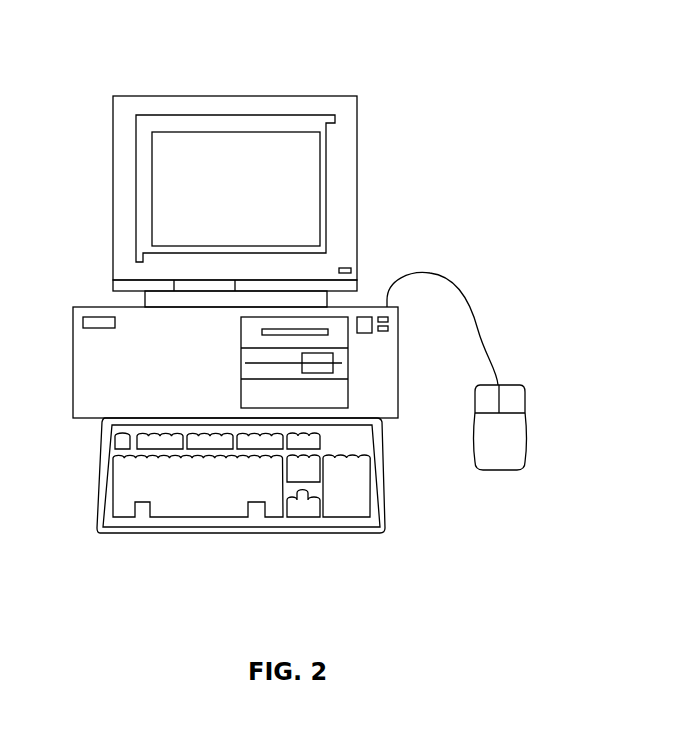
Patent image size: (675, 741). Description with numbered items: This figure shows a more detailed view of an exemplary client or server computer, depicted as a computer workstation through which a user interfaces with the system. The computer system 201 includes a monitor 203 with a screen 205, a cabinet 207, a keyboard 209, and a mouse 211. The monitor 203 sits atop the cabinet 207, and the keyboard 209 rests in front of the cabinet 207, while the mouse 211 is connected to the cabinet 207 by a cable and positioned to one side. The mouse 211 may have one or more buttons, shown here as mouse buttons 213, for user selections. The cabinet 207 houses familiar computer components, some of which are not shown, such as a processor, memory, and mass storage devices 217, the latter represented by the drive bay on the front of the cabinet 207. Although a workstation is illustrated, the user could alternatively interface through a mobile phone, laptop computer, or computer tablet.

The computer system 201 is at (369, 83).
The monitor 203 is at (358, 168).
The screen 205 is at (167, 180).
The cabinet 207 is at (95, 307).
The keyboard 209 is at (138, 532).
The mouse 211 is at (500, 457).
The mouse buttons 213 is at (490, 402).
The mass storage devices 217 is at (343, 317).